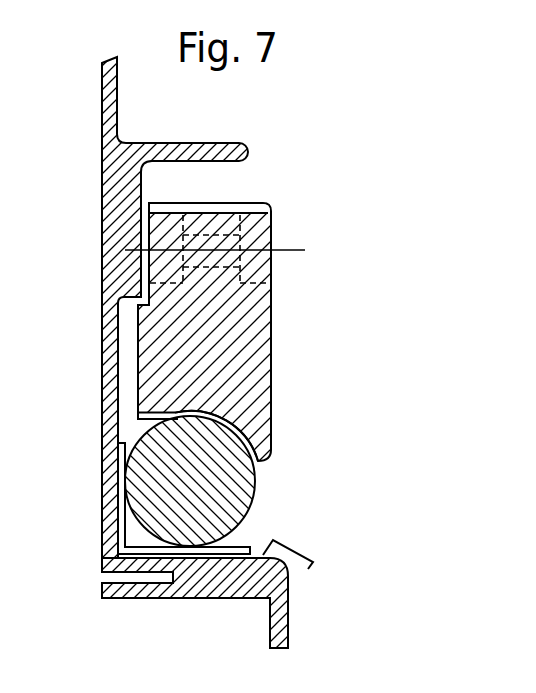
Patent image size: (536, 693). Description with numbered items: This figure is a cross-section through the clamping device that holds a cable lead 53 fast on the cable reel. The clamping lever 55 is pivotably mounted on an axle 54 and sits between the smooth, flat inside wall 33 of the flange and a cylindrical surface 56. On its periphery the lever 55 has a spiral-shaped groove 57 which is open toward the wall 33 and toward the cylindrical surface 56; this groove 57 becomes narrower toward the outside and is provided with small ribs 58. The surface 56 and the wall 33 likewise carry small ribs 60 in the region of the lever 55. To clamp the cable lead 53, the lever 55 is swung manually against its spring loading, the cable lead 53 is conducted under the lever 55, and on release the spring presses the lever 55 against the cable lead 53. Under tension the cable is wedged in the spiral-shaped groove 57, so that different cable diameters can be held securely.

The inside wall 33 is at (102, 153).
The cable lead 53 is at (197, 470).
The axle 54 is at (262, 205).
The clamping lever 55 is at (225, 333).
The cylindrical surface 56 is at (313, 565).
The spiral-shaped groove 57 is at (140, 420).
The small ribs 58 is at (183, 411).
The small ribs 60 is at (217, 556).